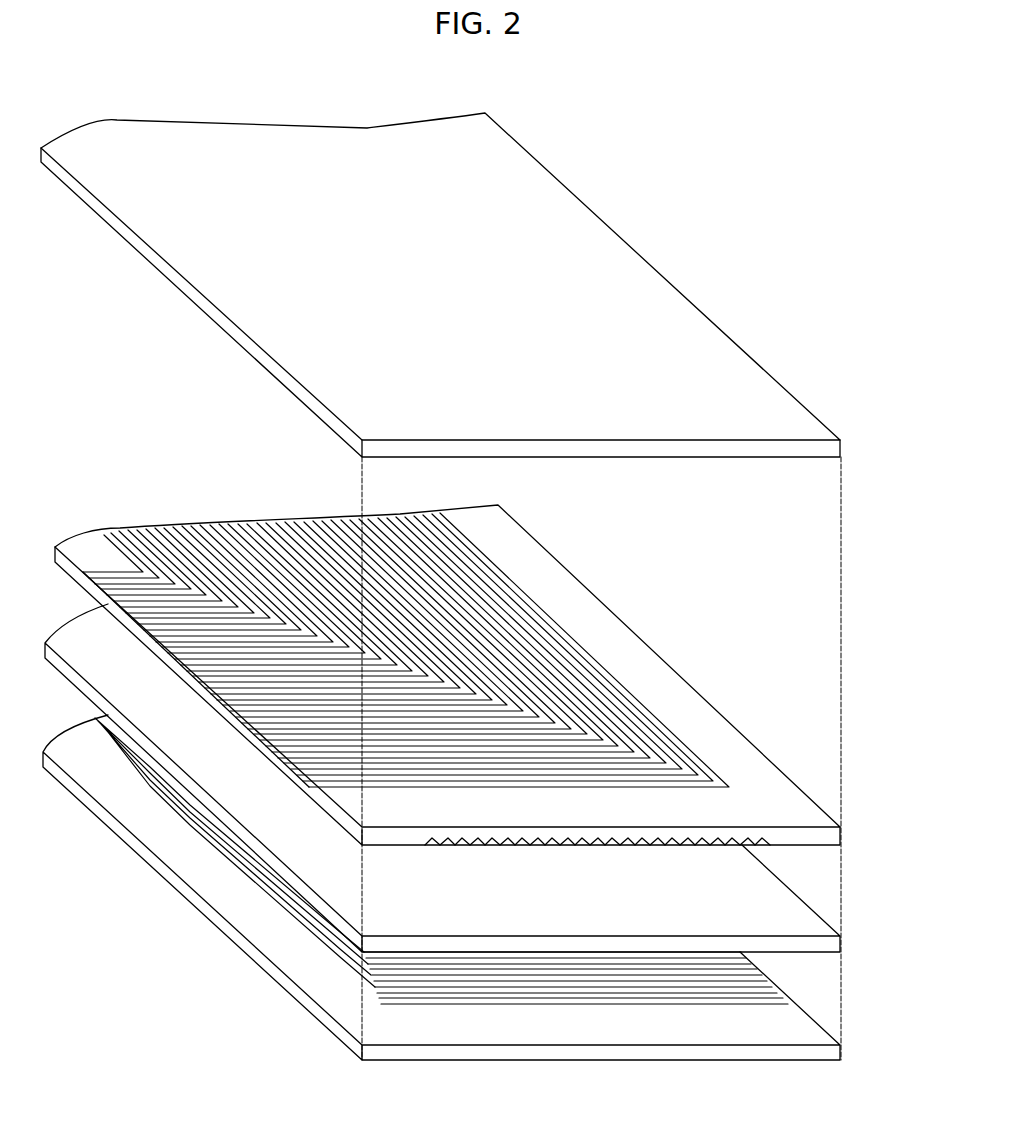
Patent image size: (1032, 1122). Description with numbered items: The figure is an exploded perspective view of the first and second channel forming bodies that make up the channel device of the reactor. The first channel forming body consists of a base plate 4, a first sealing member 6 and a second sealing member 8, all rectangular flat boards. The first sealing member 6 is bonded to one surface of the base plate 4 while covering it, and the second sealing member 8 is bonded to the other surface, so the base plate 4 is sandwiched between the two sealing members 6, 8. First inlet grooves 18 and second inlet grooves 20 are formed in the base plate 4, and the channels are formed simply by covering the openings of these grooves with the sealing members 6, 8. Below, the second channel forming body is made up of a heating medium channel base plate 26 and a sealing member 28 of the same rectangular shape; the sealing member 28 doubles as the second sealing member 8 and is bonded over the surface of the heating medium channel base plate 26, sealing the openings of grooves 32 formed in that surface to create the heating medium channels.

The first sealing member 6 is at (583, 232).
The base plate 4 is at (623, 640).
The first inlet grooves 18 is at (667, 723).
The second inlet grooves 20 is at (594, 850).
The second sealing member 8 is at (491, 778).
The sealing member 28 is at (798, 913).
The grooves 32 is at (783, 1000).
The heating medium channel base plate 26 is at (802, 1030).